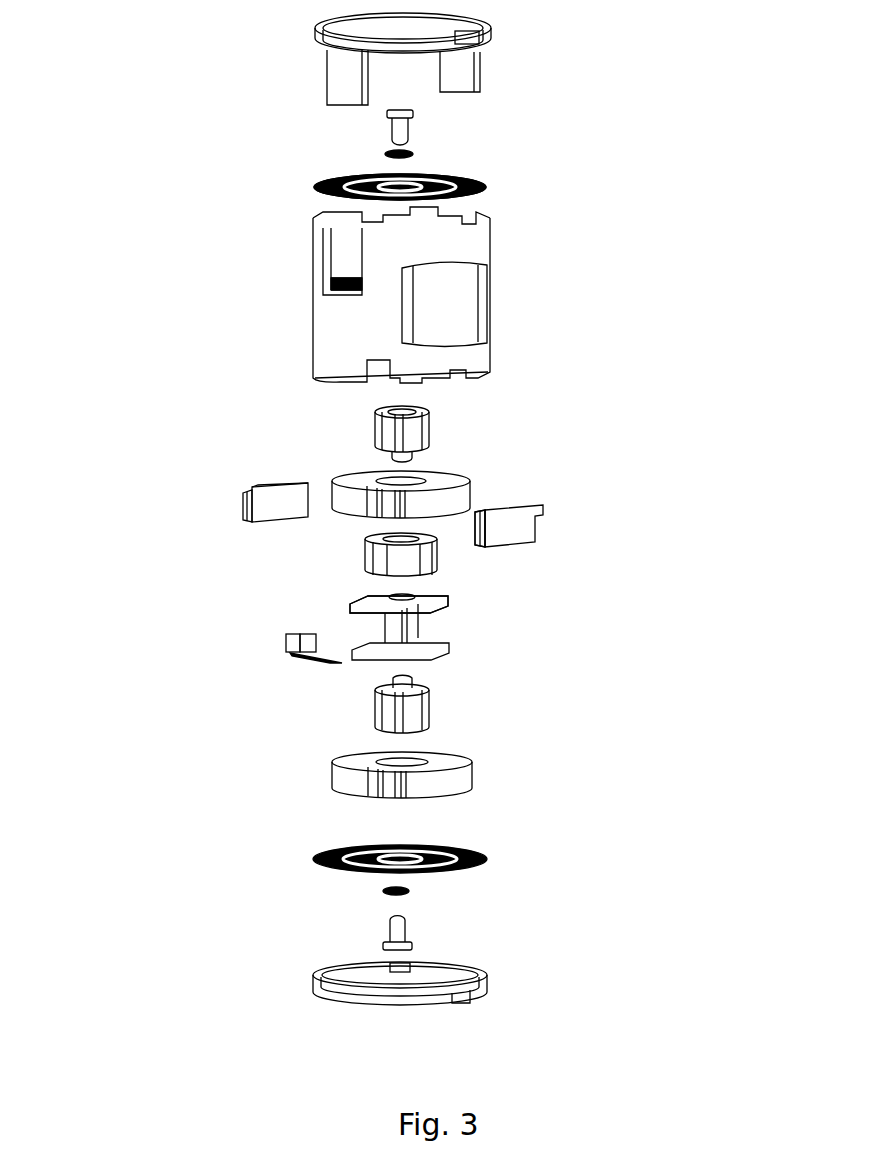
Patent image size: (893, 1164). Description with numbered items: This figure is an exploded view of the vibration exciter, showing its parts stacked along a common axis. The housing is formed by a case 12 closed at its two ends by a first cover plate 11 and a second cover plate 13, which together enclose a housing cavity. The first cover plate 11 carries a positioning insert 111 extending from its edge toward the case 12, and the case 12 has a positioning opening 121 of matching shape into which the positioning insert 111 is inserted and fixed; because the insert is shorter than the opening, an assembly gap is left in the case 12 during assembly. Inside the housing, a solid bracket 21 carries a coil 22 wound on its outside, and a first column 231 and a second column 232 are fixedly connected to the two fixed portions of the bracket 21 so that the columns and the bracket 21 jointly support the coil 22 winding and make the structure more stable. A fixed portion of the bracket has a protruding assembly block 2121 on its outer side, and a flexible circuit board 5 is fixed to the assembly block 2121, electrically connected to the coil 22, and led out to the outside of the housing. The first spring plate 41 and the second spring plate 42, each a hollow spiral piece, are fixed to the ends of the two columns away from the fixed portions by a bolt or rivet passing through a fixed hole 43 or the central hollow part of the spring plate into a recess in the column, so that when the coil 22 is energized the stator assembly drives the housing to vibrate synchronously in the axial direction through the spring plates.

The first cover plate 11 is at (318, 38).
The positioning insert 111 is at (335, 88).
The fixed hole 43 is at (337, 165).
The first spring plate 41 is at (486, 183).
The case 12 is at (313, 327).
The positioning opening 121 is at (345, 258).
The first column 231 is at (430, 425).
The coil 22 is at (365, 560).
The bracket 21 is at (448, 600).
The assembly block 2121 is at (352, 601).
The flexible circuit board 5 is at (290, 645).
The second column 232 is at (430, 688).
The second spring plate 42 is at (487, 859).
The second cover plate 13 is at (312, 990).